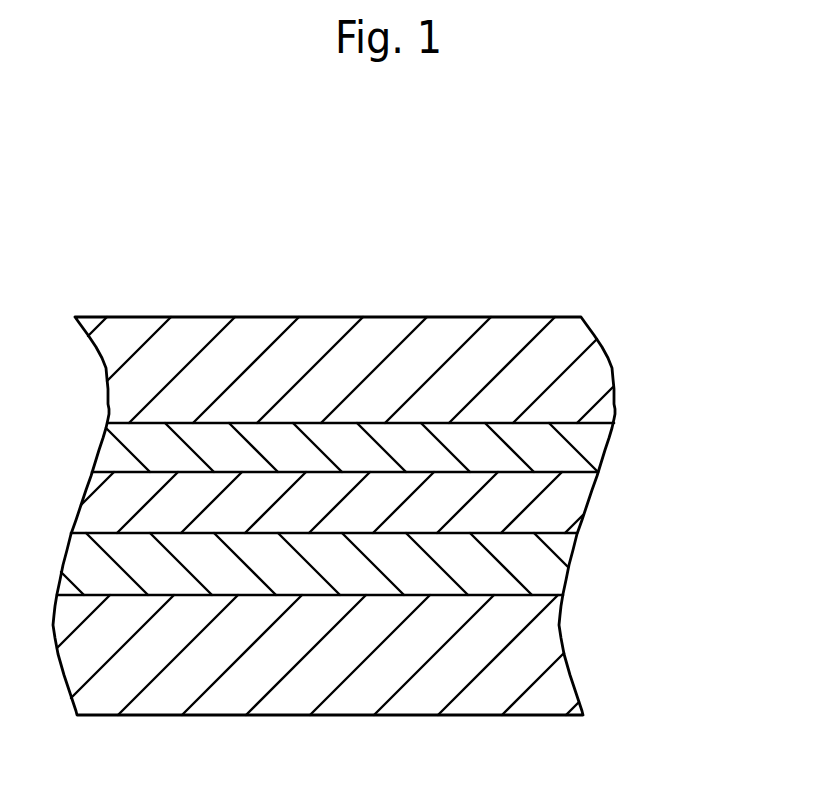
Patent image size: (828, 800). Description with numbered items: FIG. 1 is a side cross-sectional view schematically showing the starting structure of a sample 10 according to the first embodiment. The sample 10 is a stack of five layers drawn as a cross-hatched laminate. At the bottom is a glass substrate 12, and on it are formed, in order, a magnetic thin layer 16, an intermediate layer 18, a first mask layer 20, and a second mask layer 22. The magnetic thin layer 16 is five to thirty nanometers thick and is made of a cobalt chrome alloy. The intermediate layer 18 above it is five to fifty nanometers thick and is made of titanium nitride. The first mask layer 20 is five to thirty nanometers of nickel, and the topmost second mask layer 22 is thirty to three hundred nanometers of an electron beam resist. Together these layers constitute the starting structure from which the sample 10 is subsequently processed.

The sample 10 is at (396, 209).
The glass substrate 12 is at (567, 665).
The magnetic thin layer 16 is at (567, 572).
The intermediate layer 18 is at (590, 499).
The first mask layer 20 is at (608, 448).
The second mask layer 22 is at (610, 377).